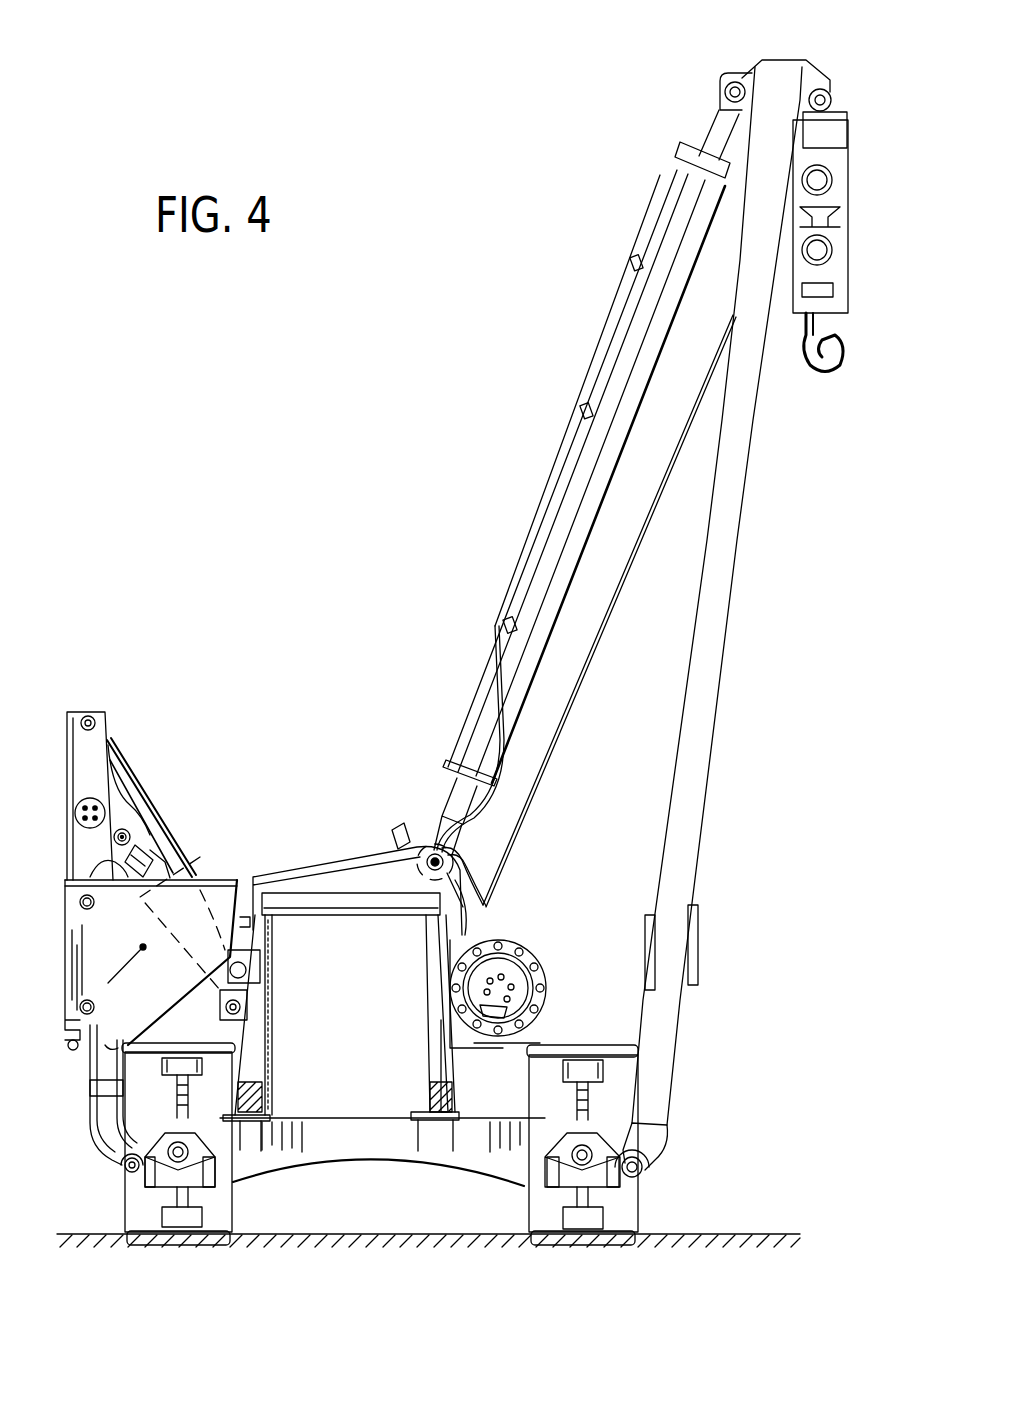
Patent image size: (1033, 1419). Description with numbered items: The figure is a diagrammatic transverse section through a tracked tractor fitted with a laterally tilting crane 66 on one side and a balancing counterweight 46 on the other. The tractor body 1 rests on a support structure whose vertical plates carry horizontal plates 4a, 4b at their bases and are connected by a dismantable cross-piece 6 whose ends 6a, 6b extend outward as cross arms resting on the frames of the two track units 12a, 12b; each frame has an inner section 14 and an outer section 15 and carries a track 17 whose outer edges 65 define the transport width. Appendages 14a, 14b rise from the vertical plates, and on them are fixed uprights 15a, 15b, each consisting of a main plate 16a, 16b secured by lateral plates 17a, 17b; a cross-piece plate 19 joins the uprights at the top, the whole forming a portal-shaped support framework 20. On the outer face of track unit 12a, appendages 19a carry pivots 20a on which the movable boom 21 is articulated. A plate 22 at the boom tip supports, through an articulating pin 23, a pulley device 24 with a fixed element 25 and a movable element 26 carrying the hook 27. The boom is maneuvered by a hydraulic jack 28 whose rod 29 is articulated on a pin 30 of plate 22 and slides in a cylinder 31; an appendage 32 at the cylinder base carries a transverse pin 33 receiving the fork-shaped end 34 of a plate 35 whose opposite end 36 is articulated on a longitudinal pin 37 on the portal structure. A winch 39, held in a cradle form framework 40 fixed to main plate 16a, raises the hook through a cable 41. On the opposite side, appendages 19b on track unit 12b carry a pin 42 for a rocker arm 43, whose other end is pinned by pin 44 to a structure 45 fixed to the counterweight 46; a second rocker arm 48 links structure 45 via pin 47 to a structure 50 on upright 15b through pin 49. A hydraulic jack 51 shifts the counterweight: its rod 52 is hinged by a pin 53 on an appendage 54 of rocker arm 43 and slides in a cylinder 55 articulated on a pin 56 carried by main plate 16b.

The tractor body 1 is at (312, 692).
The horizontal plate 4a is at (426, 1092).
The horizontal plate 4b is at (268, 1094).
The dismantable cross-piece 6 is at (358, 1160).
The end of cross-piece 6a is at (495, 1160).
The end of cross-piece 6b is at (236, 1140).
The track unit 12a is at (588, 1038).
The track unit 12b is at (118, 1180).
The inner section 14 is at (200, 1180).
The appendage 14a is at (424, 1050).
The appendage 14b is at (270, 1062).
The outer section 15 is at (128, 1200).
The upright 15a is at (440, 995).
The upright 15b is at (274, 1001).
The main plate 16a is at (458, 1088).
The main plate 16b is at (240, 1022).
The track 17 is at (140, 1028).
The lateral plate 17a is at (495, 1122).
The lateral plate 17b is at (242, 1084).
The plate 19 is at (345, 915).
The appendage 19a is at (648, 1168).
The appendage 19b is at (120, 1168).
The portal-shaped support framework 20 is at (343, 827).
The pivot 20a is at (660, 1142).
The movable boom 21 is at (711, 620).
The plate 22 is at (803, 80).
The articulating pin 23 is at (822, 92).
The pulley device 24 is at (855, 232).
The fixed element 25 is at (806, 180).
The movable element 26 is at (806, 258).
The hook 27 is at (835, 380).
The hydraulic jack 28 is at (606, 312).
The rod 29 is at (712, 130).
The pin 30 is at (722, 90).
The cylinder 31 is at (604, 443).
The appendage 32 is at (452, 800).
The pin 33 is at (490, 828).
The fork-shaped end 34 is at (485, 840).
The plate 35 is at (475, 858).
The end 36 is at (470, 890).
The pin 37 is at (432, 852).
The winch 39 is at (515, 965).
The cradle form framework 40 is at (470, 1040).
The cable 41 is at (590, 652).
The pin 42 is at (120, 1157).
The rocker arm 43 is at (92, 1088).
The pin 44 is at (75, 810).
The structure 45 is at (82, 852).
The loading balancing counterweight 46 is at (85, 1050).
The pin 47 is at (90, 715).
The rocker arm 48 is at (140, 830).
The pin 49 is at (230, 966).
The structure 50 is at (255, 968).
The hydraulic jack 51 is at (165, 855).
The rod 52 is at (147, 856).
The pin 53 is at (118, 798).
The appendage 54 is at (108, 758).
The cylinder 55 is at (190, 893).
The pin 56 is at (272, 1022).
The outer edge 65 is at (105, 1045).
The crane 66 is at (648, 212).